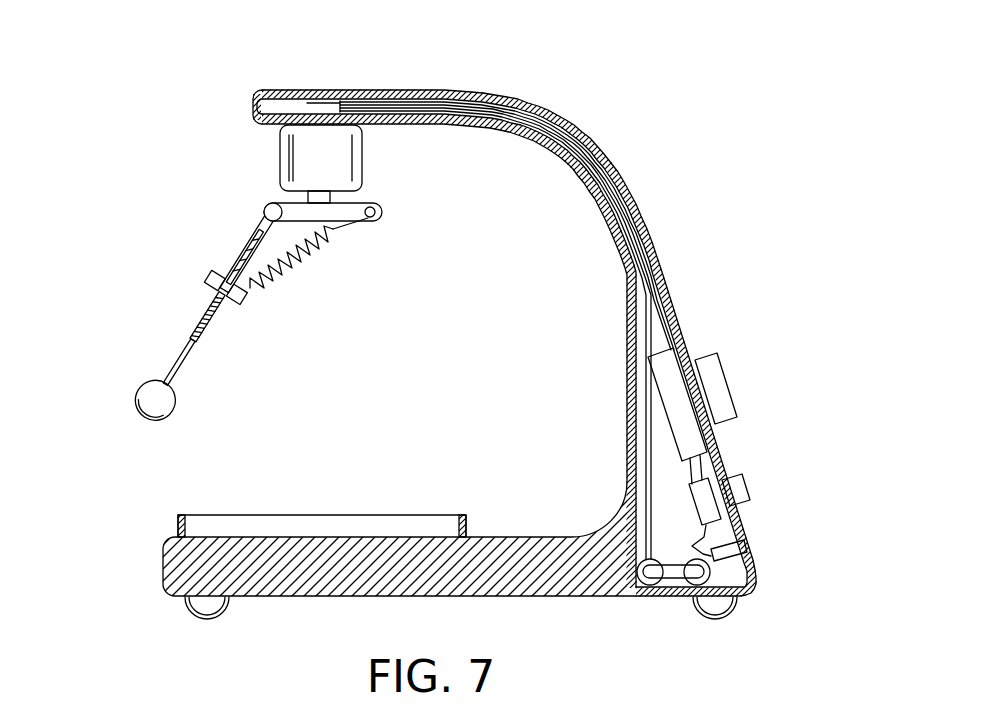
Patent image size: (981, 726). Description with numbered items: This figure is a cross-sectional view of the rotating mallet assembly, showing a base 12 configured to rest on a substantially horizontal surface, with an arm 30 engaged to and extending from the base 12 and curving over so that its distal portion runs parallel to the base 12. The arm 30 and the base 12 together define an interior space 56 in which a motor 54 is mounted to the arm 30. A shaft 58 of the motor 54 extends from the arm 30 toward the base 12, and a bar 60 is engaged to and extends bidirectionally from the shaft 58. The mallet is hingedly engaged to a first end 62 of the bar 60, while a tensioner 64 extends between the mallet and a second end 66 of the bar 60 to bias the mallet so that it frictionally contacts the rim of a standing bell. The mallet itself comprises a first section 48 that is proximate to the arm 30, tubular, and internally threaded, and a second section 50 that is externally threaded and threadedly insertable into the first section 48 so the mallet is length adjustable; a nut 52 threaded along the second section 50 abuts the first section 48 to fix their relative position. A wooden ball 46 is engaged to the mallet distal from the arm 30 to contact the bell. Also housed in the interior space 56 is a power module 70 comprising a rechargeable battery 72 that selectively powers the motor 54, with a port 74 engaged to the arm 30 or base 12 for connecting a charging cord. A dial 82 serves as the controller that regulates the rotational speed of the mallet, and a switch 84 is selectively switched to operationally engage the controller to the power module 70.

The base 12 is at (305, 583).
The arm 30 is at (650, 247).
The ball 46 is at (152, 400).
The first section 48 is at (250, 248).
The second section 50 is at (185, 345).
The nut 52 is at (215, 280).
The motor 54 is at (318, 140).
The interior space 56 is at (695, 455).
The shaft 58 is at (355, 205).
The bar 60 is at (303, 213).
The first end 62 is at (266, 208).
The tensioner 64 is at (290, 263).
The second end 66 is at (377, 215).
The power module 70 is at (692, 597).
The battery 72 is at (762, 578).
The port 74 is at (755, 545).
The dial 82 is at (717, 360).
The switch 84 is at (747, 482).